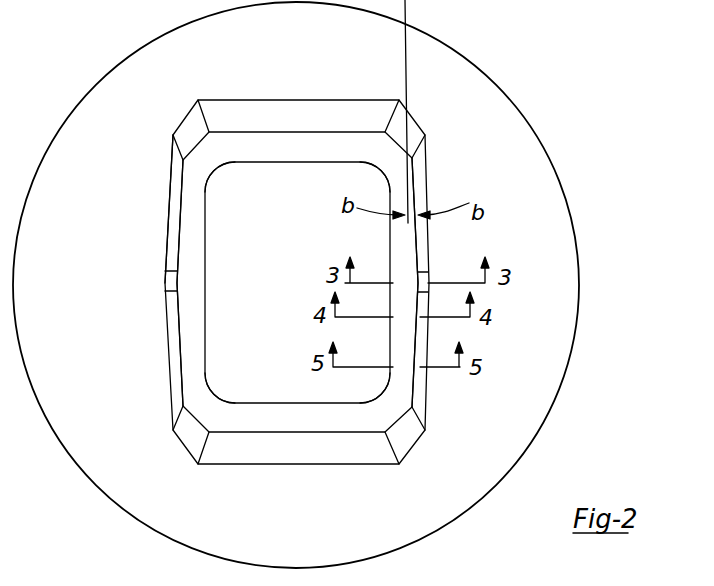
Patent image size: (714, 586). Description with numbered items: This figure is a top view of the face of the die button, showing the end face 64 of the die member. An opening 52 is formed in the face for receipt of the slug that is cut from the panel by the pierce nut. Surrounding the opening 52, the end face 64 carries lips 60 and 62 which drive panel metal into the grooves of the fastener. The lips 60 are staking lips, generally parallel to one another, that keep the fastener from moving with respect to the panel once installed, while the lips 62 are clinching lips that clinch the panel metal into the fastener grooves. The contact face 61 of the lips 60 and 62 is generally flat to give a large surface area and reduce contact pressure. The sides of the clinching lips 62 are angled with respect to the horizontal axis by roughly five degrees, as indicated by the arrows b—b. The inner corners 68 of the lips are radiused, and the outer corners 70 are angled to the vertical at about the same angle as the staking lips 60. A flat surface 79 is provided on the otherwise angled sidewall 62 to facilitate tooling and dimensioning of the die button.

The opening 52 is at (295, 271).
The staking lips 60 is at (286, 112).
The contact face 61 is at (185, 228).
The clinching lips 62 is at (214, 282).
The end face 64 is at (496, 162).
The inner corners 68 is at (218, 168).
The outer corners 70 is at (190, 127).
The flat surface 79 is at (167, 288).